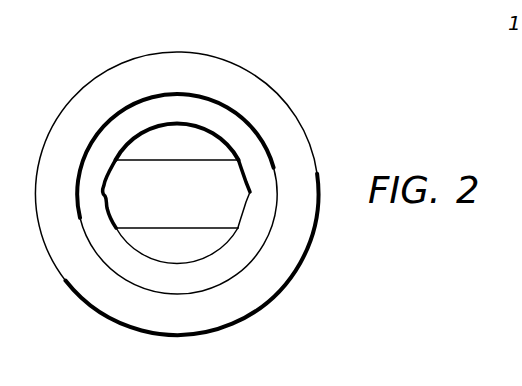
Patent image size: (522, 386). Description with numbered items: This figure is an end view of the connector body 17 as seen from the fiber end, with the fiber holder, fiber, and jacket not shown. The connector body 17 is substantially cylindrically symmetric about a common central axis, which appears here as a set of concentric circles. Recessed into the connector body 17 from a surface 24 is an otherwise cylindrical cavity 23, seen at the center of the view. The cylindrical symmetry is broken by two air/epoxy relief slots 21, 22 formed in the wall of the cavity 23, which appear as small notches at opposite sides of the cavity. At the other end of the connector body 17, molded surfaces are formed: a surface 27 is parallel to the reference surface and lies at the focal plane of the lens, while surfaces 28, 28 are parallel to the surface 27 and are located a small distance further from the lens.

The connector body 17 is at (296, 272).
The surface 24 is at (232, 135).
The surfaces 28 is at (178, 145).
The cylindrical cavity 23 is at (192, 184).
The surface 27 is at (130, 220).
The air/epoxy relief slot 21 is at (108, 195).
The air/epoxy relief slot 22 is at (248, 194).